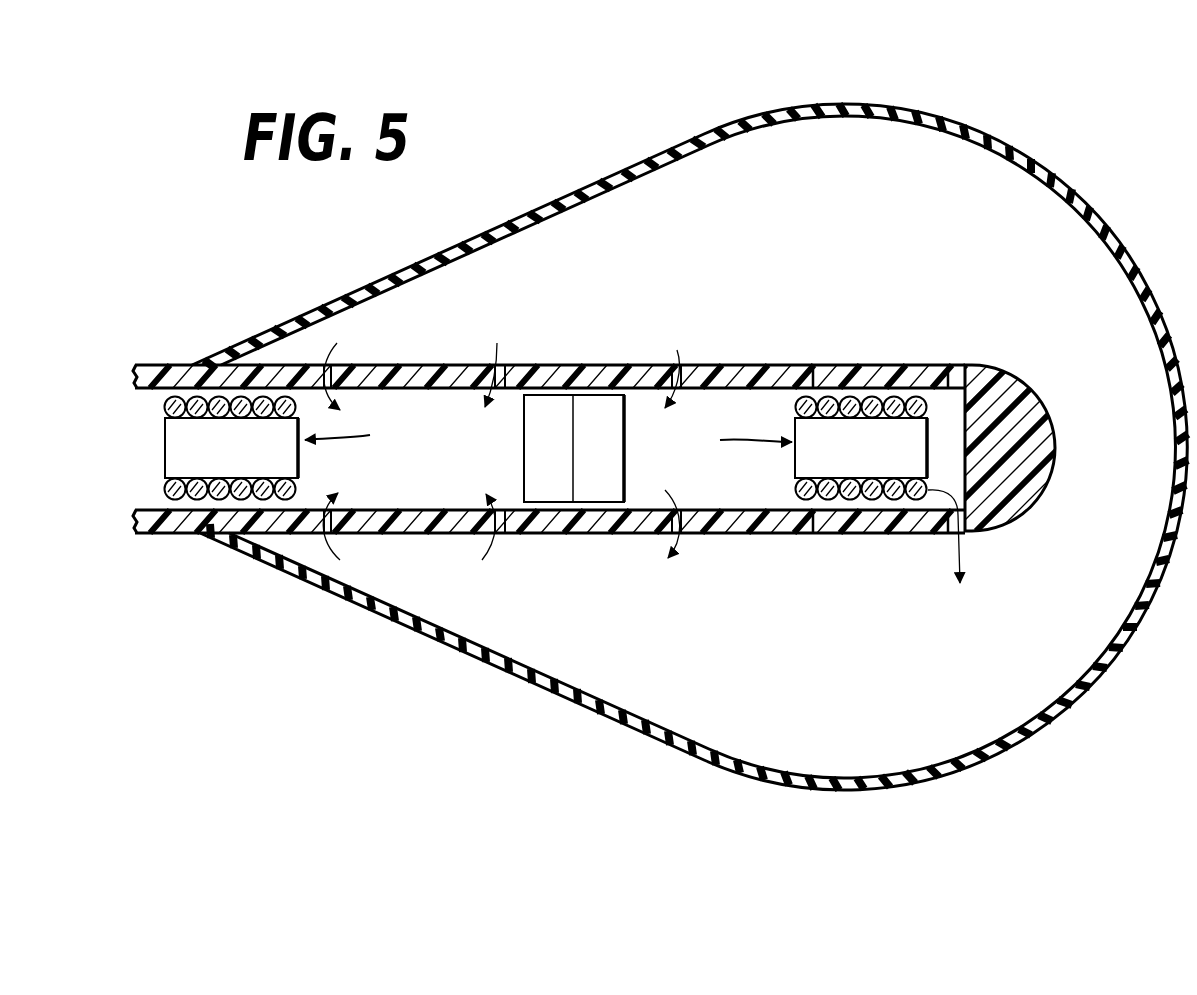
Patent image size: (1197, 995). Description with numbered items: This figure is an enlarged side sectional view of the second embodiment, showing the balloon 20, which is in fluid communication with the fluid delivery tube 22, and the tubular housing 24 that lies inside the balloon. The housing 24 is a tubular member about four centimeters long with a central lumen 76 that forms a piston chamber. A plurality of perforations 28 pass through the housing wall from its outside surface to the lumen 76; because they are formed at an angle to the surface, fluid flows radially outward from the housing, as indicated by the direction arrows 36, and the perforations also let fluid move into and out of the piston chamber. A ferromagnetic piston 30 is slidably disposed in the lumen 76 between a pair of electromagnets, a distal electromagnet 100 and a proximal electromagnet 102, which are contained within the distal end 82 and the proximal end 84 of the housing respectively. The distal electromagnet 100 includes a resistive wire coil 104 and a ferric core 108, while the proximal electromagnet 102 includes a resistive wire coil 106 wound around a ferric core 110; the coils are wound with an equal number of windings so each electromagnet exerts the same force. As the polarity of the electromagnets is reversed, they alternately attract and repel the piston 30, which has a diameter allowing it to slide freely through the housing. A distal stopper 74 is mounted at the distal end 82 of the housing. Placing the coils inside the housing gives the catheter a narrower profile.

The balloon 20 is at (1020, 158).
The fluid delivery tube 22 is at (153, 360).
The tubular housing 24 is at (890, 365).
The perforations 28 is at (672, 343).
The ferromagnetic piston 30 is at (595, 485).
The direction arrows 36 is at (497, 343).
The distal stopper 74 is at (1050, 433).
The lumen 76 is at (414, 505).
The distal end 82 is at (948, 365).
The proximal end 84 is at (160, 535).
The distal electromagnet 100 is at (735, 440).
The proximal electromagnet 102 is at (359, 432).
The resistive wire coil 104 is at (802, 500).
The resistive wire coil 106 is at (222, 405).
The ferric core 108 is at (855, 463).
The ferric core 110 is at (175, 465).